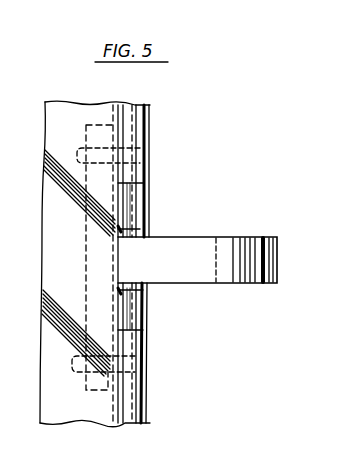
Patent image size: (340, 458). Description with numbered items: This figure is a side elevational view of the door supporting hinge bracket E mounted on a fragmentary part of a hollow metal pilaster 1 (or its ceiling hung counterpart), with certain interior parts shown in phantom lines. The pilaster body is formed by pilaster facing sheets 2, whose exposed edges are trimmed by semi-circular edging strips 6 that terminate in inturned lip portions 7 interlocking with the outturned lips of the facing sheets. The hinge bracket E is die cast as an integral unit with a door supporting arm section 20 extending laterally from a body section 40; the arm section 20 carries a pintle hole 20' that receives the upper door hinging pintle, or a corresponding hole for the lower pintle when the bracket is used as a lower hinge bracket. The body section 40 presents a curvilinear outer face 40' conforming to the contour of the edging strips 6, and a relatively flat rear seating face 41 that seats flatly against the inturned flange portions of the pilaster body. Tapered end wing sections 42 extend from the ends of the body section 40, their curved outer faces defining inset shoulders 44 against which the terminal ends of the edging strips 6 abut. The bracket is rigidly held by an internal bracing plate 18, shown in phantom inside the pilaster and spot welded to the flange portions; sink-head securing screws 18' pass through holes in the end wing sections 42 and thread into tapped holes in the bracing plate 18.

The floor supported pilaster 1 is at (63, 427).
The pilaster facing sheet 2 is at (60, 106).
The edging strip 6 is at (150, 118).
The inturned lip portion 7 is at (143, 158).
The internal bracing plate 18 is at (100, 251).
The securing screw 18' is at (129, 249).
The door supporting arm section 20 is at (197, 275).
The pintle hole 20' is at (254, 247).
The body section 40 is at (164, 264).
The curvilinear outer face 40' is at (153, 264).
The rear seating face 41 is at (121, 230).
The end wing section 42 is at (142, 179).
The inset shoulder 44 is at (126, 184).
The door supporting hinge bracket E is at (276, 287).